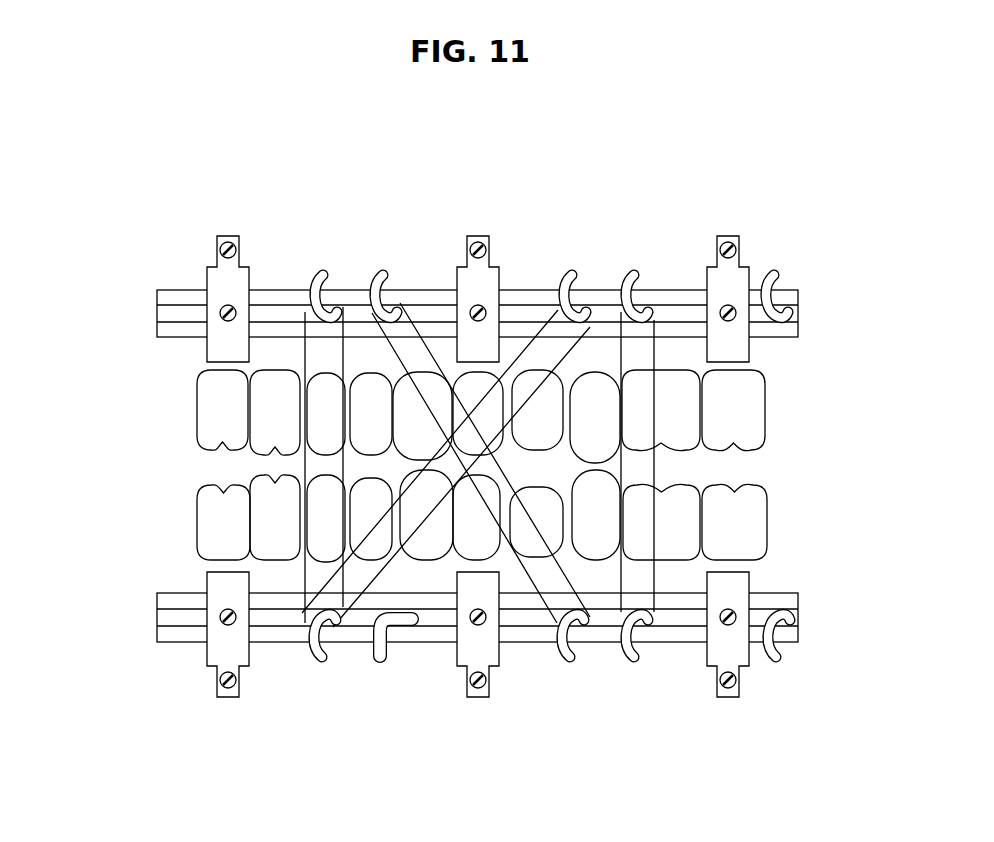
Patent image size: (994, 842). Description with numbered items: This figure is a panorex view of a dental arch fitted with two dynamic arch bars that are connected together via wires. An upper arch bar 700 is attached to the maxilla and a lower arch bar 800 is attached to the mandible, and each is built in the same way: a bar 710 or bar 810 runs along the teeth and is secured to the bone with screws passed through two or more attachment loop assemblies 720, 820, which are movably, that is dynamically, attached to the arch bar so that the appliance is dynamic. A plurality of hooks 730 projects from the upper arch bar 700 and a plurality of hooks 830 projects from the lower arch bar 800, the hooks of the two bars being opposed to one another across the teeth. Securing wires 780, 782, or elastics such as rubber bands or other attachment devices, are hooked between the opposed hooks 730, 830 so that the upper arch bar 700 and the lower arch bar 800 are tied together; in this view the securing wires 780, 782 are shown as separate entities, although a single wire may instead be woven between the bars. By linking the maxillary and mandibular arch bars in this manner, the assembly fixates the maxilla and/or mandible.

The upper orthodontic appliance 700 is at (512, 272).
The upper archwire bar 710 is at (352, 303).
The upper brackets 720 is at (228, 240).
The upper hooks 730 is at (315, 270).
The upper dental arch 780 is at (298, 466).
The lower dental arch 782 is at (660, 466).
The arch bar 800 is at (506, 682).
The bar 810 is at (349, 628).
The first attachment loop assembly 820 is at (217, 683).
The hooks 830 is at (321, 663).